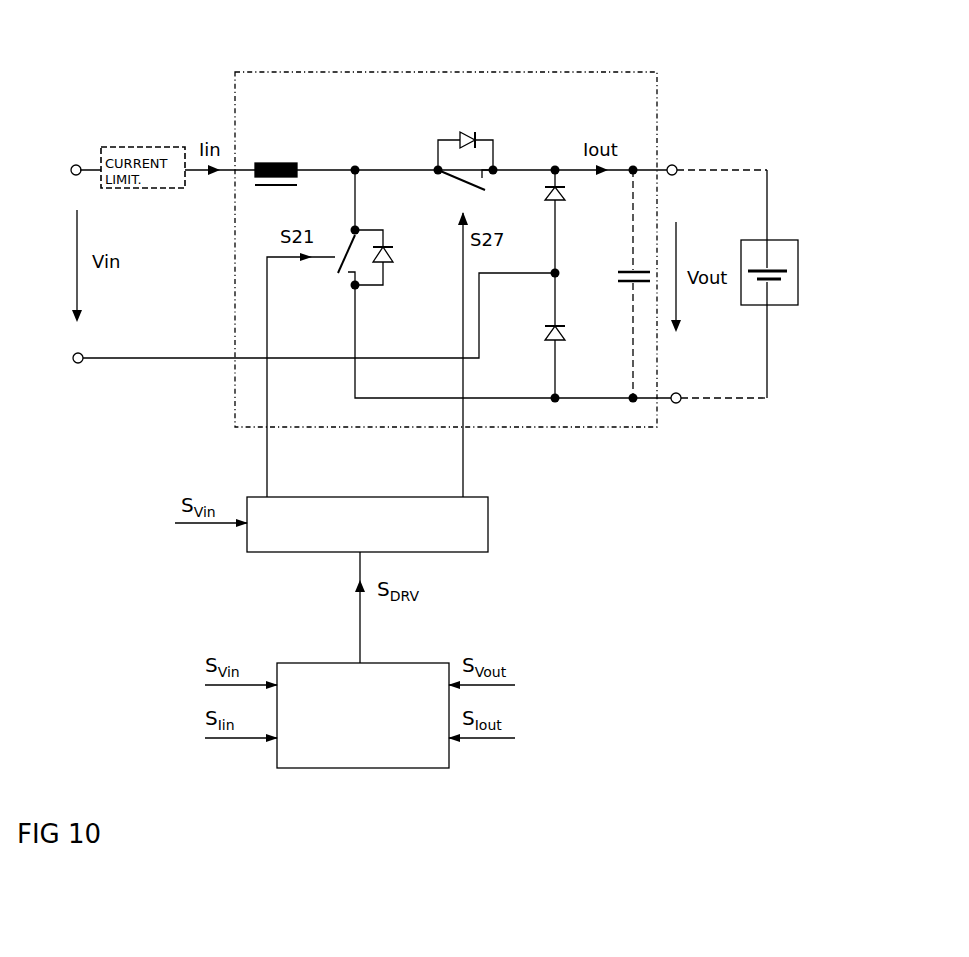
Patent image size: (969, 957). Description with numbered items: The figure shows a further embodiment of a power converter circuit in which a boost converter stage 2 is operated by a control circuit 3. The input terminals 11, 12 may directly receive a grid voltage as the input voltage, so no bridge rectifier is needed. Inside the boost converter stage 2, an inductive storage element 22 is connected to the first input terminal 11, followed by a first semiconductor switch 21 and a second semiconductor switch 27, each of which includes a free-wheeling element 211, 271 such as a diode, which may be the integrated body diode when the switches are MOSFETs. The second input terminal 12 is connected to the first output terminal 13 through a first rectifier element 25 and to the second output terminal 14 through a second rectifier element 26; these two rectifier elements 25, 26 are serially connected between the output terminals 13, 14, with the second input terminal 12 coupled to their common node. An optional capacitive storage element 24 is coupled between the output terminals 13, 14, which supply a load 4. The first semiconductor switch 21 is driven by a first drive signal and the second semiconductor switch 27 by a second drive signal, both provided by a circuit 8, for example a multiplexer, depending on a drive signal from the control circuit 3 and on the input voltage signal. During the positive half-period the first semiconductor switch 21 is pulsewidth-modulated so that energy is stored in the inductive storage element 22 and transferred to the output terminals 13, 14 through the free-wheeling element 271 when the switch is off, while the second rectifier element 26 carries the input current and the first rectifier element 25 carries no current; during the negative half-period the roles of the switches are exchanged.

The boost converter stage 2 is at (331, 72).
The control circuit 3 is at (418, 662).
The load 4 is at (801, 278).
The circuit 8 is at (491, 523).
The first input terminal 11 is at (76, 163).
The second input terminal 12 is at (76, 365).
The first output terminal 13 is at (673, 164).
The second output terminal 14 is at (680, 404).
The first semiconductor switch 21 is at (347, 244).
The free-wheeling element 211 is at (396, 252).
The inductive storage element 22 is at (275, 163).
The capacitive storage element 24 is at (623, 270).
The first rectifier element 25 is at (539, 197).
The second rectifier element 26 is at (539, 332).
The second semiconductor switch 27 is at (458, 181).
The free-wheeling element 271 is at (471, 131).